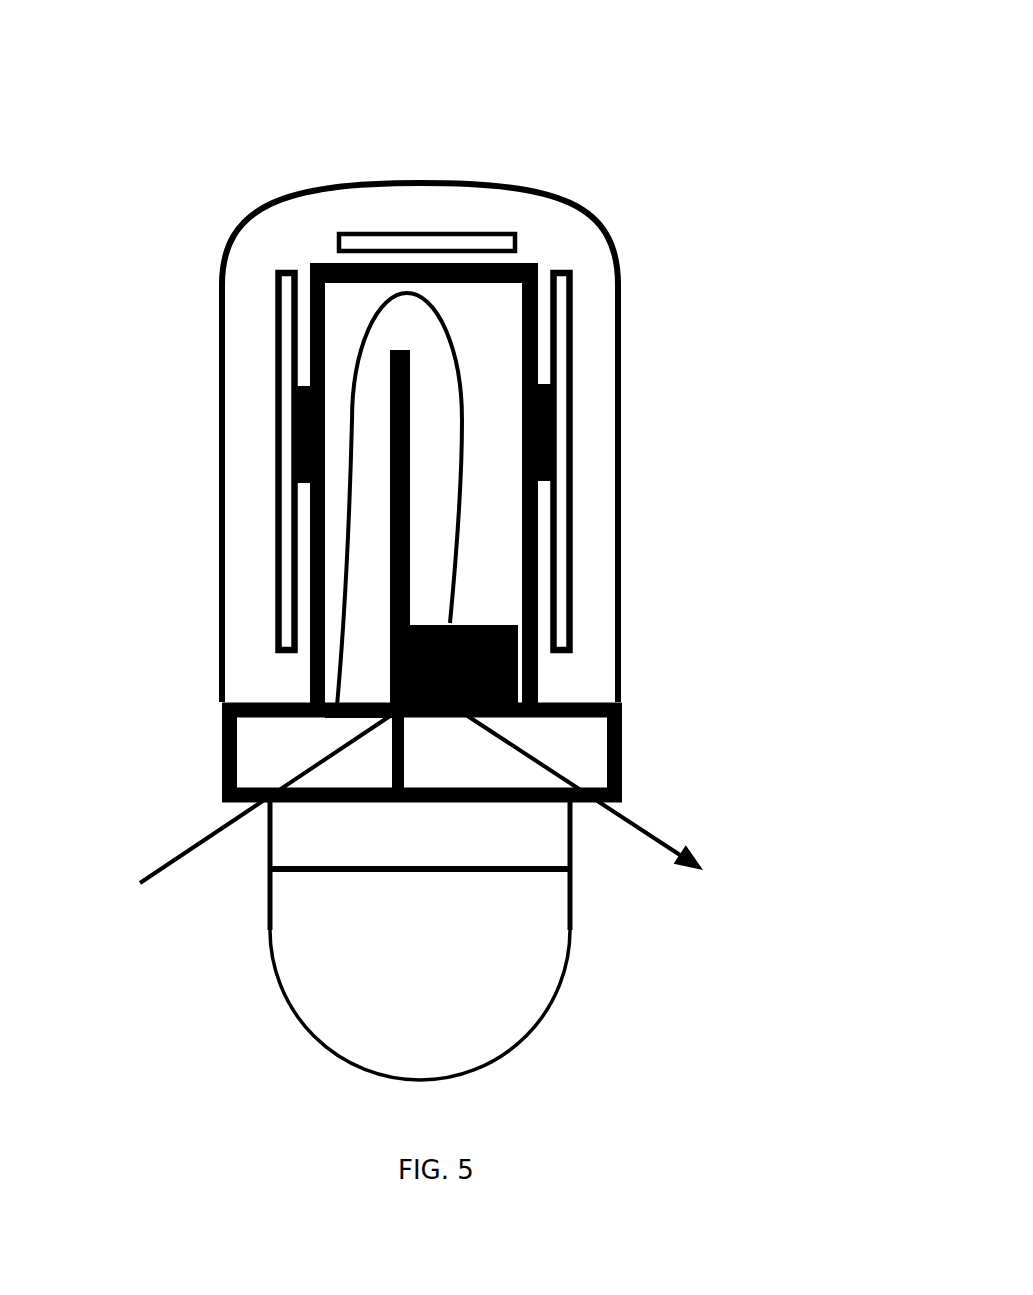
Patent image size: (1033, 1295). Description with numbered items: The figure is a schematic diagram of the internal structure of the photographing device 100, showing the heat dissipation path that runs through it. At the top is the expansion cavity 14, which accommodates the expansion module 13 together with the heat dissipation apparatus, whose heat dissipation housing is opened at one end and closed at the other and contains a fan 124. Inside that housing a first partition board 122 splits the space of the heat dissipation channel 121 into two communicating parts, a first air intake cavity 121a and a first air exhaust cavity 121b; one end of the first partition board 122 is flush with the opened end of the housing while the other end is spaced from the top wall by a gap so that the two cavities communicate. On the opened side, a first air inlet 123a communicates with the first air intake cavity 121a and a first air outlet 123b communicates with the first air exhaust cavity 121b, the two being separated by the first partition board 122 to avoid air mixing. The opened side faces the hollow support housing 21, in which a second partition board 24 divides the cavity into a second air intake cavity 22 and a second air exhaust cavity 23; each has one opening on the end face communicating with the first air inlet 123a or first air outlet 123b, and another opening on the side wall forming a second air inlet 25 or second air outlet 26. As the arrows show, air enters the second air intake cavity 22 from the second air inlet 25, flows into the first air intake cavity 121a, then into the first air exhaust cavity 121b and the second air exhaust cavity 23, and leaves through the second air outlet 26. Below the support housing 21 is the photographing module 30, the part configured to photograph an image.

The photographing device 100 is at (714, 141).
The expansion cavity 14 is at (592, 443).
The expansion module 13 is at (297, 490).
The heat dissipation channel 121 is at (493, 57).
The first air intake cavity 121a is at (347, 340).
The first air exhaust cavity 121b is at (488, 312).
The first partition board 122 is at (392, 522).
The first air inlet 123a is at (310, 700).
The first air outlet 123b is at (537, 700).
The fan 124 is at (540, 618).
The support housing 21 is at (627, 745).
The second air intake cavity 22 is at (245, 750).
The second air exhaust cavity 23 is at (572, 743).
The second partition board 24 is at (323, 807).
The second air inlet 25 is at (267, 855).
The second air outlet 26 is at (630, 797).
The photographing module 30 is at (560, 1002).